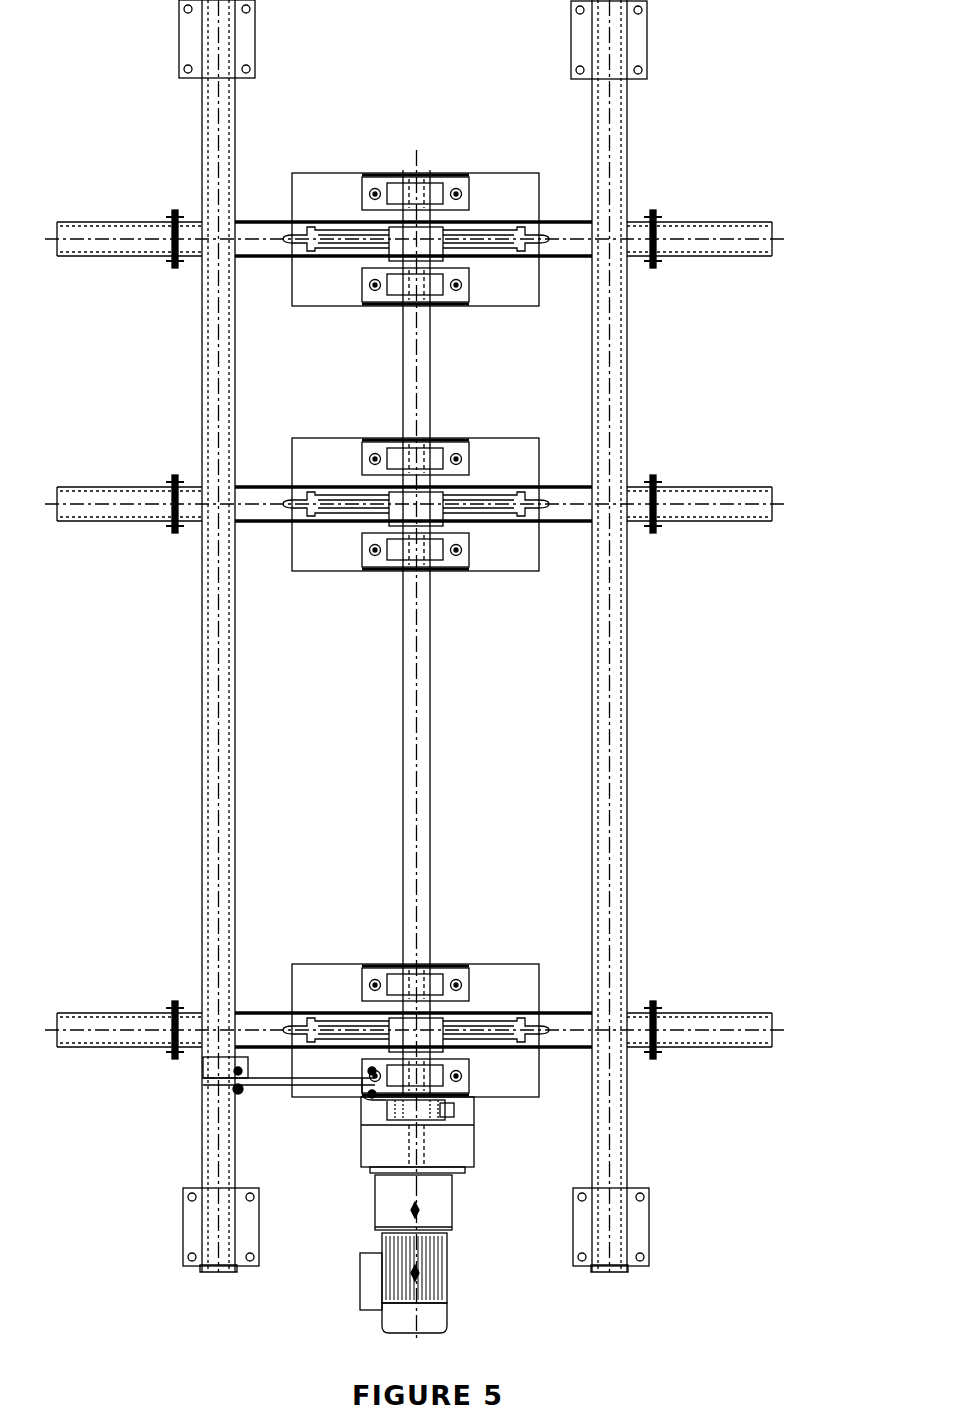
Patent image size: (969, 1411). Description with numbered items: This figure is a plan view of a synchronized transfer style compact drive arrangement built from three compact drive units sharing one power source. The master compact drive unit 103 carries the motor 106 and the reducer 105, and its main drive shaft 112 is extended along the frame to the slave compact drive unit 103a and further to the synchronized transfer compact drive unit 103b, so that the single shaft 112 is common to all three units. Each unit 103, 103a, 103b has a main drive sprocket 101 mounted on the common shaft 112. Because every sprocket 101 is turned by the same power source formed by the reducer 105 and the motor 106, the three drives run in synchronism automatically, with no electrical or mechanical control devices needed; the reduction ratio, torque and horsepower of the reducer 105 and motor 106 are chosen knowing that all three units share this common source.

The main drive sprocket 101 is at (360, 247).
The master compact drive unit 103 is at (483, 962).
The slave compact drive unit 103a is at (482, 572).
The synchronized transfer compact drive unit 103b is at (482, 312).
The main drive shaft 112 is at (432, 775).
The reducer 105 is at (473, 1170).
The motor 106 is at (448, 1278).